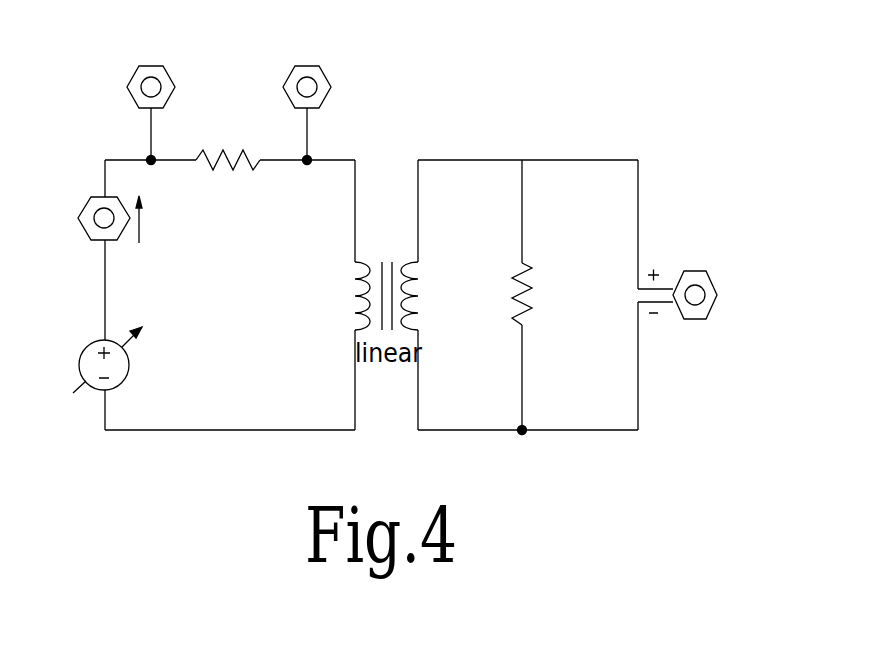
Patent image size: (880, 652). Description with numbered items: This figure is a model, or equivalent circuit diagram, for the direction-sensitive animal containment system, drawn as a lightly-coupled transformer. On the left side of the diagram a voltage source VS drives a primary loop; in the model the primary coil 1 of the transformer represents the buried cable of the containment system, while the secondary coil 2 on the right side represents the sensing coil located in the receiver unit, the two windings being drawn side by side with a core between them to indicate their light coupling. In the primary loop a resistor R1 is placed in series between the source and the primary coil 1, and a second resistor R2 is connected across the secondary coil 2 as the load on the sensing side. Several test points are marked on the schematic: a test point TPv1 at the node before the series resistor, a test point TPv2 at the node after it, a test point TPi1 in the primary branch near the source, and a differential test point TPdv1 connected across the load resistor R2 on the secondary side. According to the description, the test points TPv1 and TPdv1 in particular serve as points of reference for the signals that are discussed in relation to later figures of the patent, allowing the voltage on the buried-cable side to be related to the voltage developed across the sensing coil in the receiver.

The test point TPv1 is at (151, 92).
The voltage test point 2 TPv2 is at (307, 92).
The current test point 1 TPi1 is at (84, 219).
The resistor R1 is at (228, 145).
The resistor R2 is at (544, 294).
The voltage source VS is at (93, 360).
The transformer primary winding 1 is at (364, 281).
The transformer secondary winding 2 is at (408, 281).
The test point TPdv1 is at (709, 295).